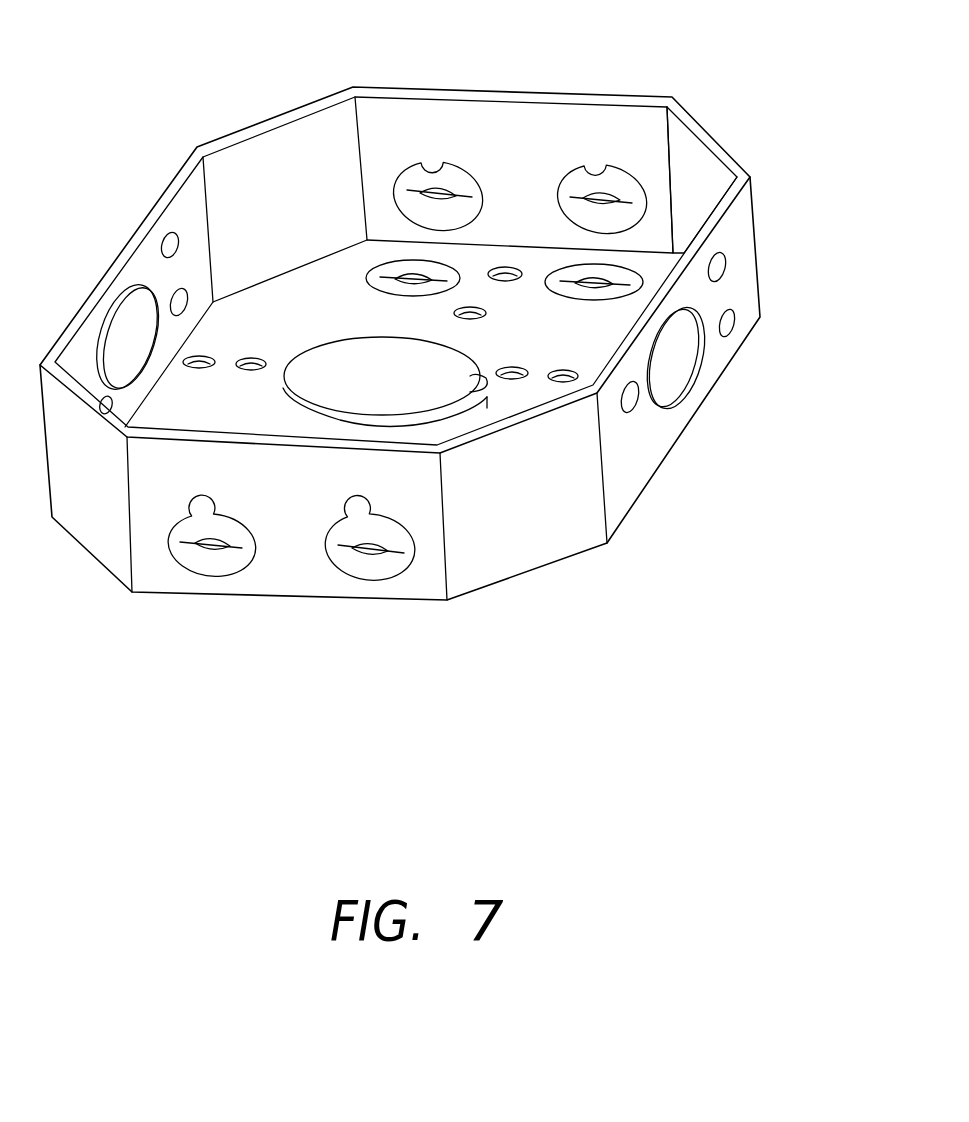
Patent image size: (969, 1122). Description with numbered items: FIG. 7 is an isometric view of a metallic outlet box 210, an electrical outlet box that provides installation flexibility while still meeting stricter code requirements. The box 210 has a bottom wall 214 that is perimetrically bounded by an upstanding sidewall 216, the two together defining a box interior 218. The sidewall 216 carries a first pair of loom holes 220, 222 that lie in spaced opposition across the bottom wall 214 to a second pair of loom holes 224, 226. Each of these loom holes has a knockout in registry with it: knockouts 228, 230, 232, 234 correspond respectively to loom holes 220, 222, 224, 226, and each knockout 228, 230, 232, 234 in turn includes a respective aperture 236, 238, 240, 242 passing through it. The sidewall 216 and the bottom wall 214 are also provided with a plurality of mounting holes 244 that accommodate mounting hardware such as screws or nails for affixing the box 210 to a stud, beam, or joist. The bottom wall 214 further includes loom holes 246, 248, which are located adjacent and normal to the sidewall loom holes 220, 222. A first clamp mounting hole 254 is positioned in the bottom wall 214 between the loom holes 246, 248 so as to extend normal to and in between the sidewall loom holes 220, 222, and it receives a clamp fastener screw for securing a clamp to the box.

The metallic outlet box 210 is at (163, 42).
The bottom wall 214 is at (228, 308).
The upstanding sidewall 216 is at (278, 143).
The box interior 218 is at (345, 117).
The loom hole 220 is at (457, 163).
The loom hole 222 is at (563, 163).
The loom hole 224 is at (227, 582).
The loom hole 226 is at (362, 585).
The knockout 228 is at (406, 176).
The knockout 230 is at (602, 200).
The knockout 232 is at (218, 562).
The knockout 234 is at (383, 572).
The aperture 236 is at (433, 193).
The aperture 238 is at (622, 182).
The aperture 240 is at (202, 548).
The aperture 242 is at (405, 560).
The mounting holes 244 is at (733, 250).
The loom hole 246 is at (365, 283).
The loom hole 248 is at (633, 281).
The first clamp mounting hole 254 is at (482, 278).